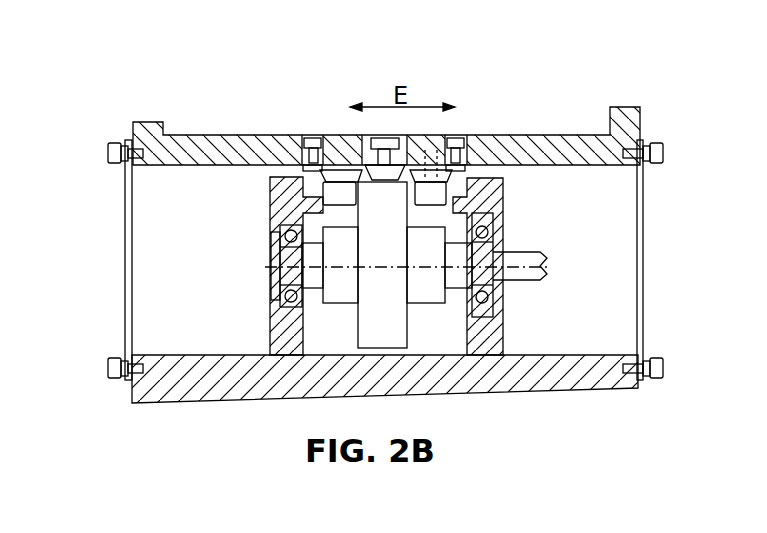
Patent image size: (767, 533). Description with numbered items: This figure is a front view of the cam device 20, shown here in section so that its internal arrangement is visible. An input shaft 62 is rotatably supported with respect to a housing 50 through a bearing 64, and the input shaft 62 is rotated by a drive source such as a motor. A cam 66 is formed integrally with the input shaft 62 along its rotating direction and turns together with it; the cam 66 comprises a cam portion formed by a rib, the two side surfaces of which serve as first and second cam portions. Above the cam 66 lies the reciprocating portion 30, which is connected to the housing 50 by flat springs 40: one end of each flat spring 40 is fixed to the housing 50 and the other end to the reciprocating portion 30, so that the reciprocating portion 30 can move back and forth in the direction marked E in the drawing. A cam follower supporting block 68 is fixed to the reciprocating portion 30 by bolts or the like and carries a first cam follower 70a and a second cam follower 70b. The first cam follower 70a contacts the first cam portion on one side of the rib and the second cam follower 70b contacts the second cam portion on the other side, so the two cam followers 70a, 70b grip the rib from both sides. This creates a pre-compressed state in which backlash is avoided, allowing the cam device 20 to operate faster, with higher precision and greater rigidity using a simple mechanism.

The cam device 20 is at (395, 251).
The reciprocating portion 30 is at (573, 143).
The flat springs 40 is at (127, 273).
The housing 50 is at (541, 385).
The input shaft 62 is at (531, 258).
The bearing 64 is at (280, 294).
The cam 66 is at (395, 330).
The cam follower supporting block 68 is at (330, 134).
The first cam follower 70a is at (344, 192).
The second cam follower 70b is at (430, 192).